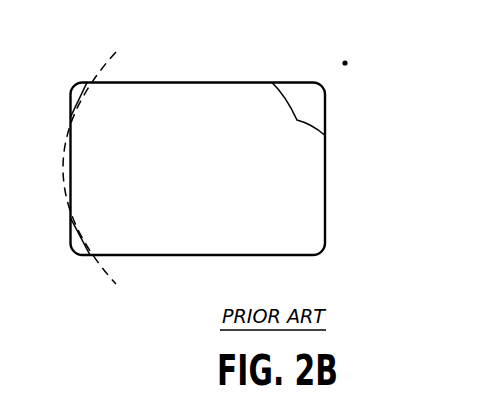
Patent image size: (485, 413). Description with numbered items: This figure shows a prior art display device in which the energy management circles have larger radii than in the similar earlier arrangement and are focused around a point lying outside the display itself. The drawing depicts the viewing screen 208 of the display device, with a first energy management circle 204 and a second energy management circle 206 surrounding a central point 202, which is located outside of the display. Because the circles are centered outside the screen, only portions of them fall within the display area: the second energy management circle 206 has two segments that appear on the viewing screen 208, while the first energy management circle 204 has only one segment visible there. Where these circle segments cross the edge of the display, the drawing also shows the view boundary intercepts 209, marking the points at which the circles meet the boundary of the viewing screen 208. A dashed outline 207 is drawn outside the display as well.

The central point 202 is at (345, 63).
The first energy management circle 204 is at (297, 122).
The second energy management circle 206 is at (80, 98).
The folded-over corner region (dashed outline) 207 is at (113, 55).
The viewing screen 208 is at (307, 237).
The view boundary intercepts 209 is at (87, 82).